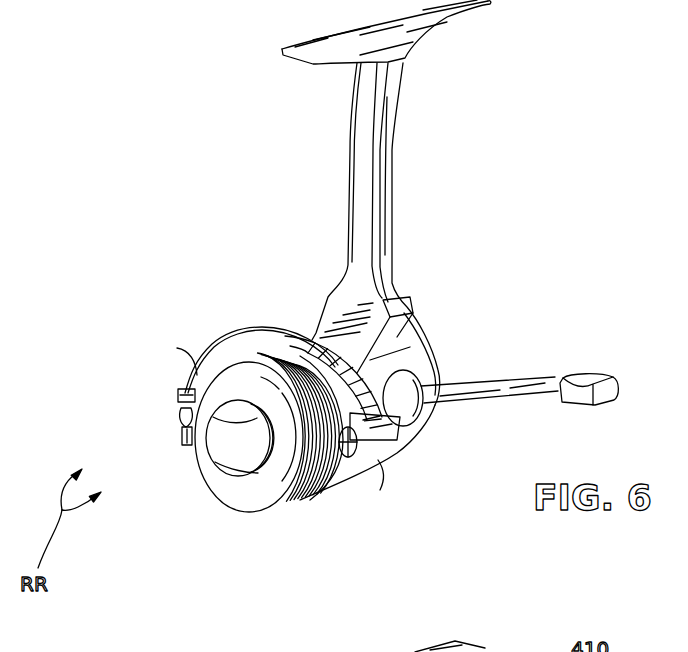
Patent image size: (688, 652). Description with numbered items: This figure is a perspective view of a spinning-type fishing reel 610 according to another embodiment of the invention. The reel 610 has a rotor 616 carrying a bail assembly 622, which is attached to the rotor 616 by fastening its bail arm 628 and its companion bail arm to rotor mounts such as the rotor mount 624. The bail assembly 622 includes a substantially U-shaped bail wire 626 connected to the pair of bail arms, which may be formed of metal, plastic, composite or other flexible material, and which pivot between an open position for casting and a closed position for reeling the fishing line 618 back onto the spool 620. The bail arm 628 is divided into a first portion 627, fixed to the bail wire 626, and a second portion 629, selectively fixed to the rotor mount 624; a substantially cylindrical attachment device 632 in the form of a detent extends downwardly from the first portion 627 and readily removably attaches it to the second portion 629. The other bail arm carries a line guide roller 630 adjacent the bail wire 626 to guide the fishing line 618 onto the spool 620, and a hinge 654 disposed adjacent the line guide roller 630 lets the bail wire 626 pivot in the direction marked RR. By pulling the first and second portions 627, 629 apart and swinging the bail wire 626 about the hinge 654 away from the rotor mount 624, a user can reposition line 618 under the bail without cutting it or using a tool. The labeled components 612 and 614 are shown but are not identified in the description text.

The fishing reel 610 is at (345, 320).
The reel foot / stem 612 is at (387, 193).
The handle 614 is at (592, 373).
The rotor 616 is at (410, 347).
The fishing line 618 is at (350, 475).
The spool 620 is at (300, 498).
The bail assembly 622 is at (223, 329).
The rotor mount 624 is at (400, 444).
The bail wire 626 is at (177, 348).
The first portion 627 is at (293, 505).
The bail arm 628 is at (385, 445).
The second portion 629 is at (378, 460).
The line guide roller 630 is at (178, 402).
The attachment device 632 is at (352, 460).
The hinge 654 is at (182, 410).